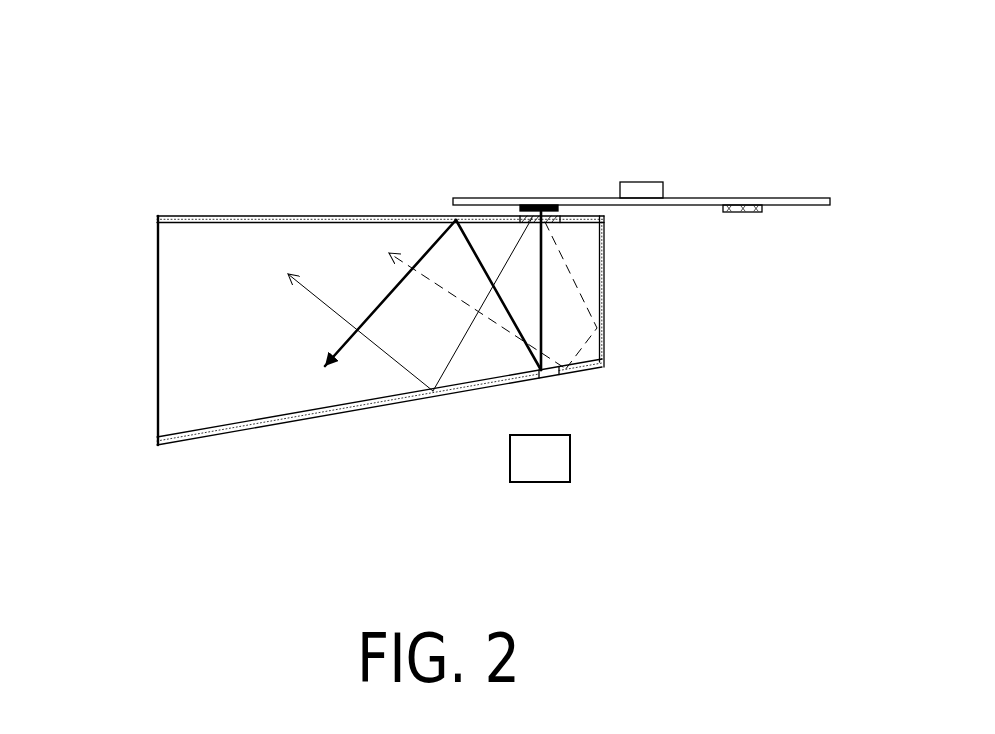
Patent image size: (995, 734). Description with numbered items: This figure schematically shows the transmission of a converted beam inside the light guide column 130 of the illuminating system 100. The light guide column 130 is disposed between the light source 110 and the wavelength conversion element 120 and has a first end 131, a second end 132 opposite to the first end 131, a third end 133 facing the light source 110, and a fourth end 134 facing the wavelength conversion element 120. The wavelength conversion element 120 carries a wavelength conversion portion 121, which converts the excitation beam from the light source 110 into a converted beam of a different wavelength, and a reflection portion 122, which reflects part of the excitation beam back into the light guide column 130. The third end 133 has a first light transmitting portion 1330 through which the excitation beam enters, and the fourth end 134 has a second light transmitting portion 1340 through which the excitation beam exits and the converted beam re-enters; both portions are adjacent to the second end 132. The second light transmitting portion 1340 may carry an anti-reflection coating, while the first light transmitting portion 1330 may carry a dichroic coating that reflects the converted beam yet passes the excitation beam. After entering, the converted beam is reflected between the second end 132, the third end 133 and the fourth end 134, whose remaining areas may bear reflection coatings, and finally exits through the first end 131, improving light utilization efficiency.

The illuminating system 100 is at (90, 47).
The light source 110 is at (554, 455).
The wavelength conversion element 120 is at (804, 169).
The wavelength conversion portion 121 is at (549, 206).
The reflection portion 122 is at (745, 213).
The light guide column 130 is at (167, 199).
The first end 131 is at (156, 330).
The second end 132 is at (604, 300).
The third end 133 is at (409, 398).
The fourth end 134 is at (394, 225).
The first light transmitting portion 1330 is at (520, 374).
The second light transmitting portion 1340 is at (512, 217).